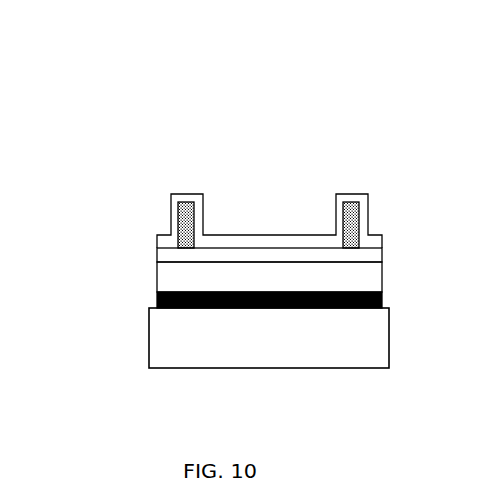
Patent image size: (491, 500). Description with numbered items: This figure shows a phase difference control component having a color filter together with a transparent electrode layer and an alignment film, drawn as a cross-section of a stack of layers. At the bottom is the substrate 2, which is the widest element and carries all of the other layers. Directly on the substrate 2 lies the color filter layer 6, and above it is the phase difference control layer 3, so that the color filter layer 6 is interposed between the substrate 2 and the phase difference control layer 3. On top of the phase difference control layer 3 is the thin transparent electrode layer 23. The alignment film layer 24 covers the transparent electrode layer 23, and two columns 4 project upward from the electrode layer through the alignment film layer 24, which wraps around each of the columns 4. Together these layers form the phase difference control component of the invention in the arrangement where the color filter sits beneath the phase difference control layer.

The substrate 2 is at (247, 362).
The phase difference control layer 3 is at (163, 280).
The columns 4 is at (188, 208).
The color filter layer 6 is at (157, 300).
The transparent electrode layer 23 is at (162, 252).
The alignment film layer 24 is at (257, 243).